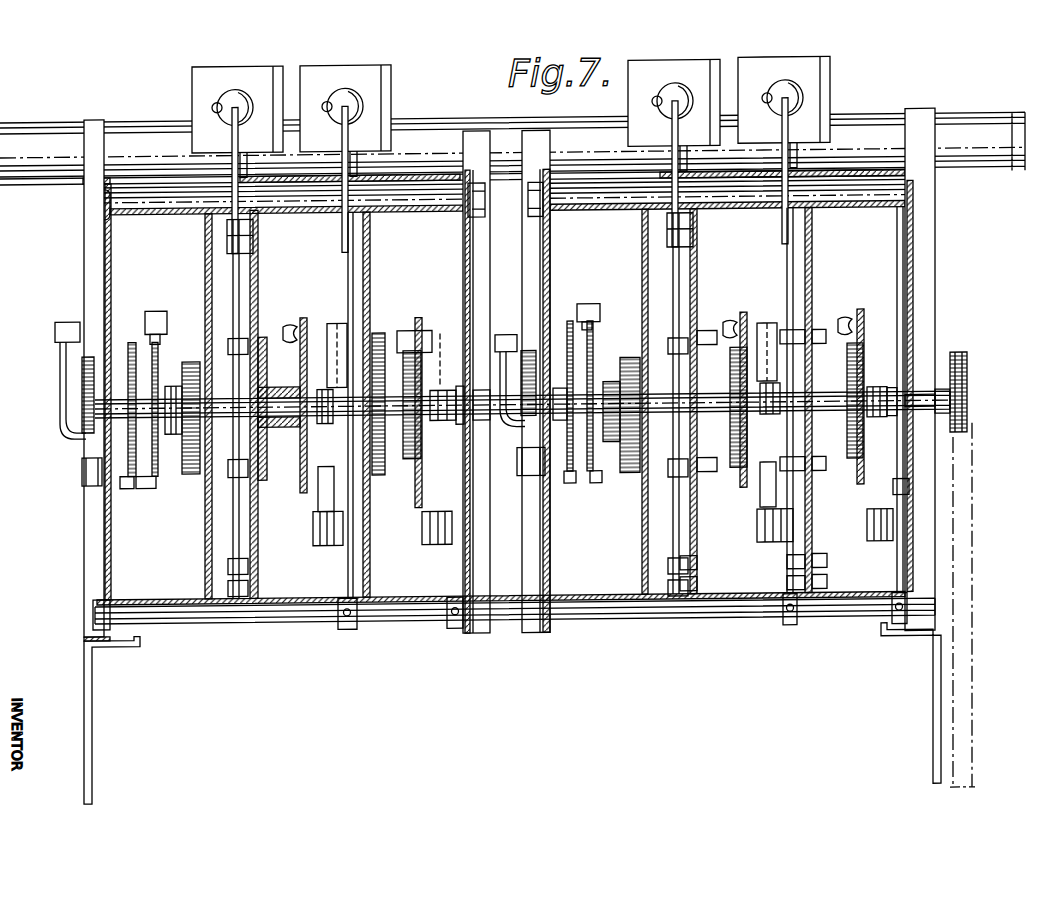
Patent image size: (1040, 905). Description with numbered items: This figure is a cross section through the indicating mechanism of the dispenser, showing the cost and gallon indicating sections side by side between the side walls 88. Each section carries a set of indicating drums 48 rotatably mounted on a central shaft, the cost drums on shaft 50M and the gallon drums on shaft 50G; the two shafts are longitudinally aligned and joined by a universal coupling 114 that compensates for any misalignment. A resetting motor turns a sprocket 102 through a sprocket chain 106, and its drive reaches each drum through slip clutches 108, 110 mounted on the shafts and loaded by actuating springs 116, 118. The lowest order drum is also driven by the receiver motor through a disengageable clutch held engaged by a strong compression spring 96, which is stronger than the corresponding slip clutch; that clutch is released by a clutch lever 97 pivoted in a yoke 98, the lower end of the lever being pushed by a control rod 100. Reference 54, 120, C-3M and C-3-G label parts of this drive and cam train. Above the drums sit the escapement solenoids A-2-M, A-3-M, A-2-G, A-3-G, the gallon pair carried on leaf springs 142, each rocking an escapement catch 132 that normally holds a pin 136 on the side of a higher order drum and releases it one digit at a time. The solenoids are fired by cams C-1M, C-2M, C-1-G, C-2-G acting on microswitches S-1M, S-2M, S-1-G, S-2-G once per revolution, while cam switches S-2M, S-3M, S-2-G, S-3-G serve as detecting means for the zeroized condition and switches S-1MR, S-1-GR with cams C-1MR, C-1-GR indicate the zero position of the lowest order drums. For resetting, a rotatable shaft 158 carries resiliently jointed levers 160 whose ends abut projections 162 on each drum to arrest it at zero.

The indicating drum 48 is at (142, 254).
The drive shaft axis 54 is at (970, 422).
The side wall 88 is at (107, 577).
The compression spring 96 is at (80, 435).
The clutch lever 97 is at (62, 394).
The yoke 98 is at (76, 332).
The control rod 100 is at (100, 492).
The sprocket 102 is at (967, 360).
The sprocket chain 106 is at (968, 410).
The slip clutch 108 is at (683, 383).
The slip clutch 110 is at (550, 353).
The universal coupling 114 is at (468, 432).
The actuating spring 116 is at (673, 405).
The actuating spring 118 is at (311, 425).
The gear 120 is at (400, 417).
The escapement catch 132 is at (232, 147).
The pin 136 is at (236, 325).
The leaf spring 142 is at (281, 189).
The rotatable shaft 158 is at (247, 614).
The resiliently jointed lever 160 is at (374, 626).
The projection 162 is at (532, 504).
The central shaft 50M is at (279, 408).
The central shaft 50G is at (920, 413).
The solenoid A-2-M is at (208, 66).
The solenoid A-3-M is at (343, 66).
The solenoid A-2-G is at (655, 64).
The solenoid A-3-G is at (771, 62).
The microswitch S-1M is at (145, 318).
The cam switch S-1MR is at (129, 342).
The cam switch S-2M is at (285, 330).
The cam switch S-3M is at (405, 336).
The microswitch S-1-G is at (580, 315).
The cam switch S-1-GR is at (565, 328).
The cam switch S-2-G is at (727, 332).
The cam switch S-3-G is at (843, 332).
The cam C-1M is at (143, 488).
The cam C-1MR is at (130, 490).
The cam C-2M is at (299, 492).
The clutch C-3M is at (415, 521).
The cam C-1-G is at (592, 480).
The cam C-1-GR is at (570, 490).
The cam C-2-G is at (740, 485).
The clutch C-3-G is at (866, 509).